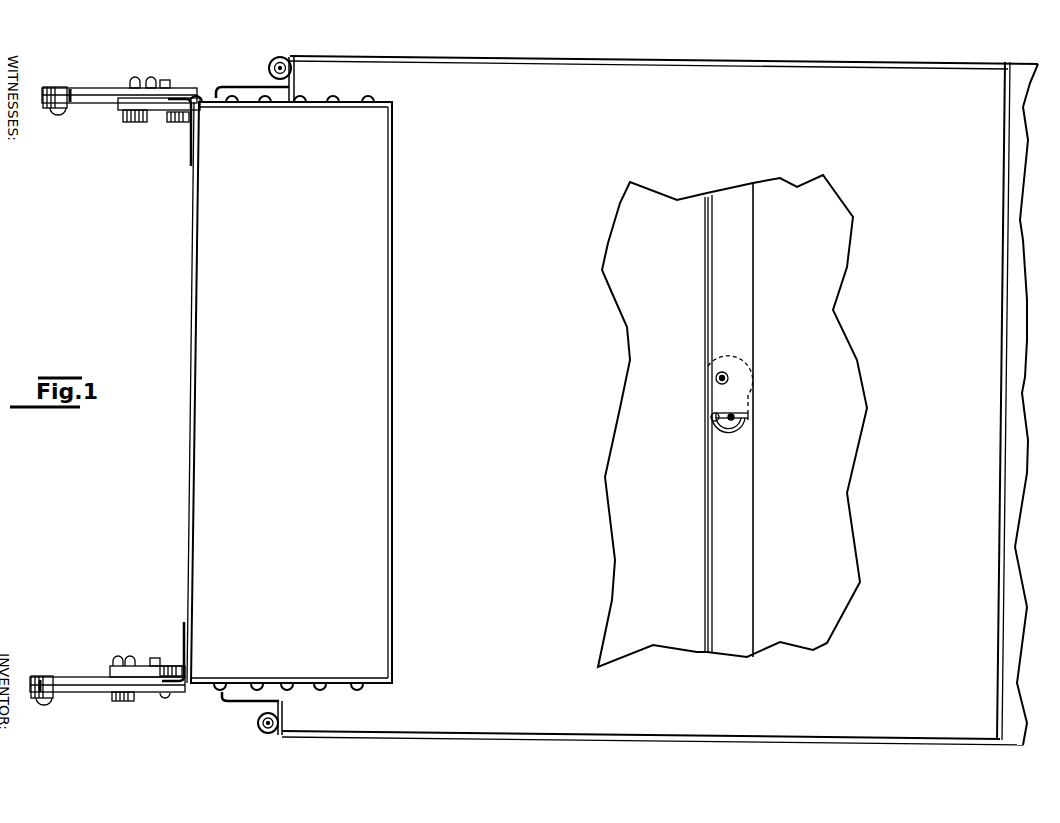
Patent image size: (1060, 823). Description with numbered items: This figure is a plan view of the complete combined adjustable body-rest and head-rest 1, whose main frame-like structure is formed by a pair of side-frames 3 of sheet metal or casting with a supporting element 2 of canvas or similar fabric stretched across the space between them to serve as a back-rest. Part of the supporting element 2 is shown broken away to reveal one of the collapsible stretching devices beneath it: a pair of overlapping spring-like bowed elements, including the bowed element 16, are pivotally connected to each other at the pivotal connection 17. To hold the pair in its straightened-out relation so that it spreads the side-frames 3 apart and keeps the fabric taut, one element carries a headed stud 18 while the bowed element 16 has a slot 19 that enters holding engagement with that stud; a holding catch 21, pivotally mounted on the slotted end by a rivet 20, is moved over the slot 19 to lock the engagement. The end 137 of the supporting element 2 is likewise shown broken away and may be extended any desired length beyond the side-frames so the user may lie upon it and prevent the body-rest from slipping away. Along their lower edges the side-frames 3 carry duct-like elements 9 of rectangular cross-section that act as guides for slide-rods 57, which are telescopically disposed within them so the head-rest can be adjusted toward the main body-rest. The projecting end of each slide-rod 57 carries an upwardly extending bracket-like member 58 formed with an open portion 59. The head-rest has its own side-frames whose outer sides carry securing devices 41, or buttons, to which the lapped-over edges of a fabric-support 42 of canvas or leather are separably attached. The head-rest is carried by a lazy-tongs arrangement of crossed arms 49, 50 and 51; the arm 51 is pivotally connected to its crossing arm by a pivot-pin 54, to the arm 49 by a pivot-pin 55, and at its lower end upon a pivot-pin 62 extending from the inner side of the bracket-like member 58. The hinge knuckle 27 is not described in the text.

The combined adjustable body-rest and head-rest 1 is at (660, 383).
The supporting element 2 is at (709, 421).
The side-frame 3 is at (255, 94).
The duct-like element 9 is at (180, 122).
The bowed element 16 is at (742, 287).
The pivotal connection 17 is at (716, 378).
The headed stud 18 is at (718, 433).
The slot 19 is at (751, 401).
The rivet 20 is at (710, 419).
The holding catch 21 is at (750, 437).
The hinge knuckle 27 is at (247, 745).
The securing devices 41 is at (367, 96).
The fabric-support 42 is at (378, 331).
The crossed arm 49 is at (180, 104).
The crossed arm 50 is at (170, 94).
The crossed arm 51 is at (80, 103).
The pivot-pin 54 is at (147, 88).
The pivot-pin 55 is at (137, 89).
The slide-rod 57 is at (102, 90).
The bracket-like member 58 is at (85, 95).
The open portion 59 is at (170, 122).
The pivot-pin 62 is at (57, 88).
The extended fabric-portion 137 is at (1003, 412).